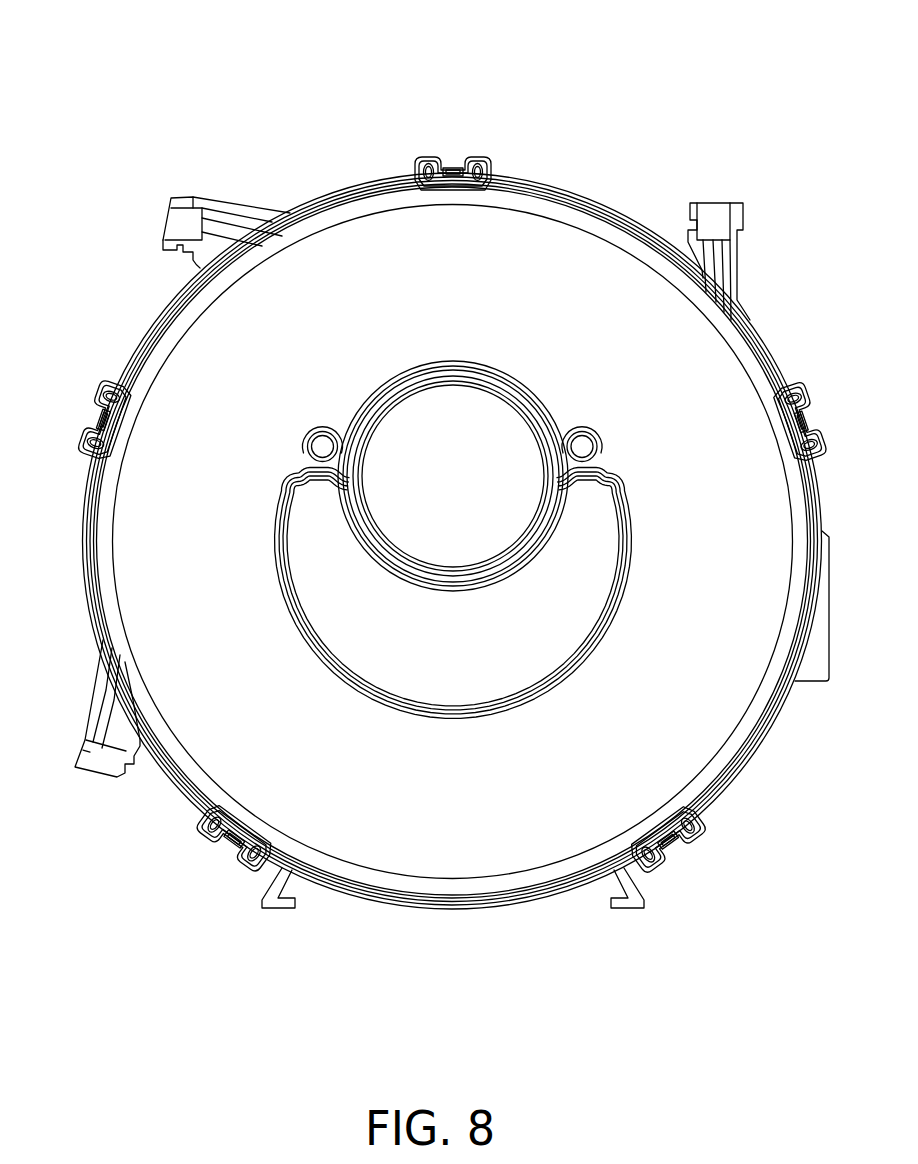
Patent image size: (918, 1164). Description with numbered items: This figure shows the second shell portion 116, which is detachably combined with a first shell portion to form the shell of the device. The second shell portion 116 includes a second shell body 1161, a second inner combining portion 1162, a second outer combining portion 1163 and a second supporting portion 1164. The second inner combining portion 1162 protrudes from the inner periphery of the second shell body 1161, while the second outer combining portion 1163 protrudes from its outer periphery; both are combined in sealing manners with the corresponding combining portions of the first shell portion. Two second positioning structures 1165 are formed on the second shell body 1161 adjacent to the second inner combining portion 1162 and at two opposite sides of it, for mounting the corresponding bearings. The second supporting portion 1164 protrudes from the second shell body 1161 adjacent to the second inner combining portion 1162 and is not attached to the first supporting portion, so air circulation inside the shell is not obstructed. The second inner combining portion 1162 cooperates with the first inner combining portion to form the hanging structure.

The second shell portion 116 is at (435, 493).
The second shell body 1161 is at (690, 368).
The second inner combining portion 1162 is at (492, 384).
The second outer combining portion 1163 is at (358, 173).
The second supporting portion 1164 is at (389, 706).
The second positioning structure 1165 is at (318, 447).